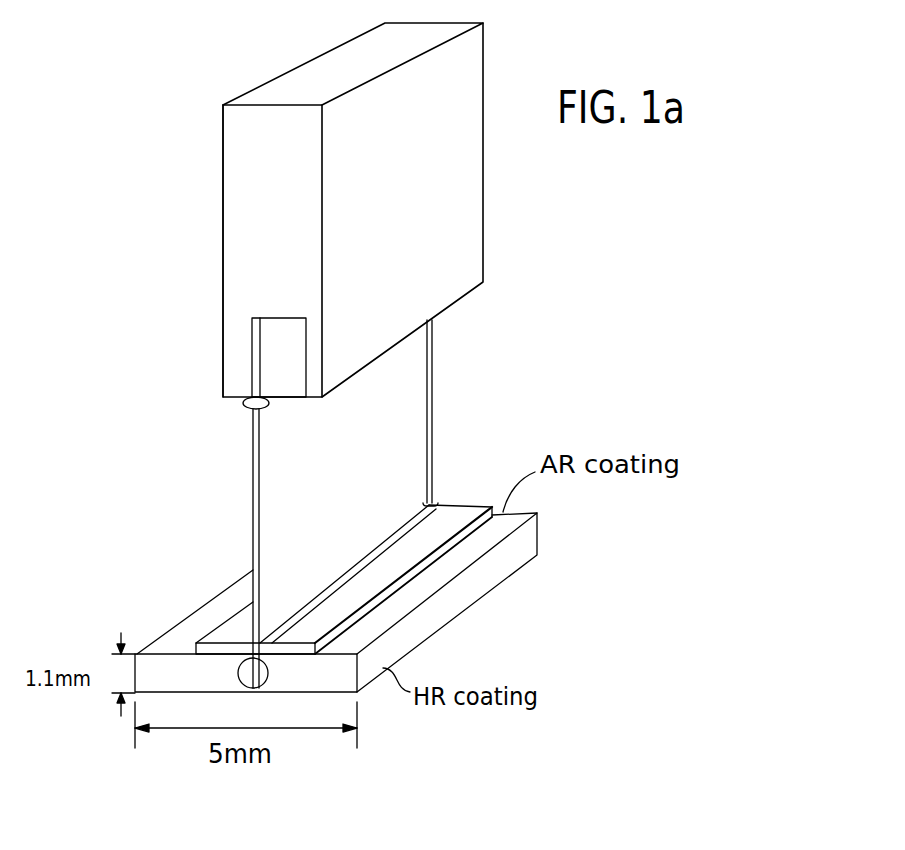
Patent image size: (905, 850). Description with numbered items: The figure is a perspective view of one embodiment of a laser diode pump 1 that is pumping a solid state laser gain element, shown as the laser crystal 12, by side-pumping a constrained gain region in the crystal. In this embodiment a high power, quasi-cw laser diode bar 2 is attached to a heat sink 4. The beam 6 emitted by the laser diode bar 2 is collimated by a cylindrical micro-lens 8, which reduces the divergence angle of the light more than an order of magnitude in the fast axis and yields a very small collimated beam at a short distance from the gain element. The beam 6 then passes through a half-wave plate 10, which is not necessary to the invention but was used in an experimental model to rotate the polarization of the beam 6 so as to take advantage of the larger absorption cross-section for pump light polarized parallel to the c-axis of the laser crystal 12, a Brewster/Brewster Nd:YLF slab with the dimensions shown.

The laser diode pump 1 is at (500, 58).
The laser diode bar 2 is at (255, 332).
The heat sink 4 is at (223, 365).
The beam 6 is at (433, 388).
The micro-lens 8 is at (243, 403).
The half-wave plate 10 is at (220, 635).
The laser crystal 12 is at (465, 580).